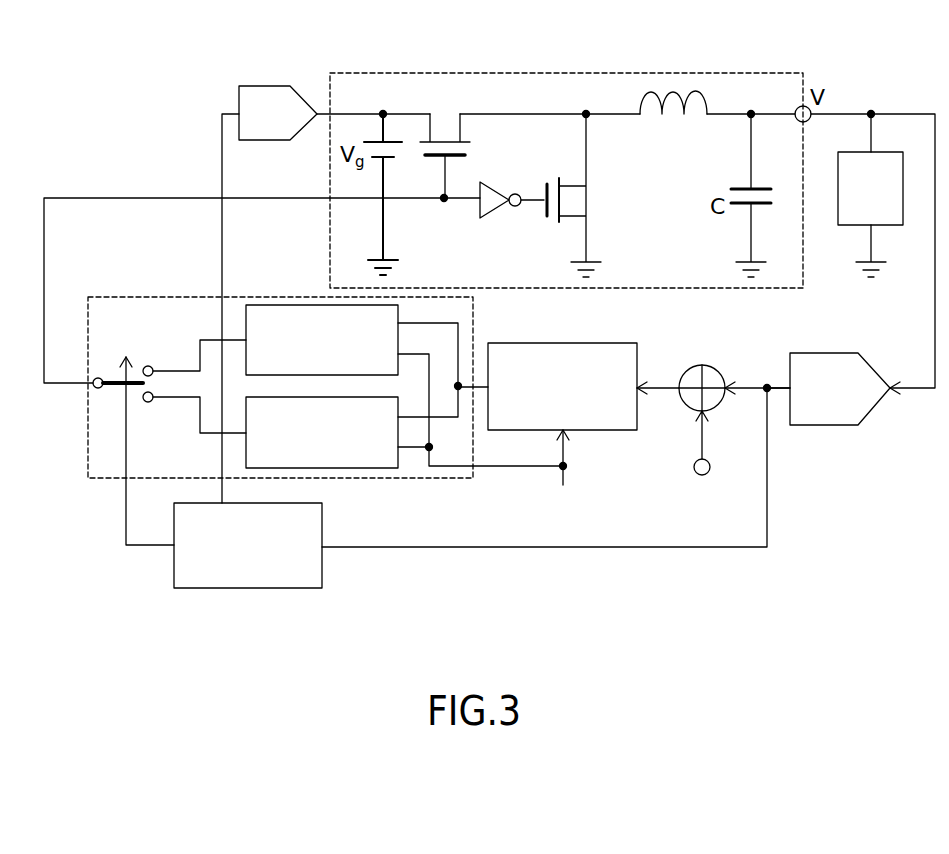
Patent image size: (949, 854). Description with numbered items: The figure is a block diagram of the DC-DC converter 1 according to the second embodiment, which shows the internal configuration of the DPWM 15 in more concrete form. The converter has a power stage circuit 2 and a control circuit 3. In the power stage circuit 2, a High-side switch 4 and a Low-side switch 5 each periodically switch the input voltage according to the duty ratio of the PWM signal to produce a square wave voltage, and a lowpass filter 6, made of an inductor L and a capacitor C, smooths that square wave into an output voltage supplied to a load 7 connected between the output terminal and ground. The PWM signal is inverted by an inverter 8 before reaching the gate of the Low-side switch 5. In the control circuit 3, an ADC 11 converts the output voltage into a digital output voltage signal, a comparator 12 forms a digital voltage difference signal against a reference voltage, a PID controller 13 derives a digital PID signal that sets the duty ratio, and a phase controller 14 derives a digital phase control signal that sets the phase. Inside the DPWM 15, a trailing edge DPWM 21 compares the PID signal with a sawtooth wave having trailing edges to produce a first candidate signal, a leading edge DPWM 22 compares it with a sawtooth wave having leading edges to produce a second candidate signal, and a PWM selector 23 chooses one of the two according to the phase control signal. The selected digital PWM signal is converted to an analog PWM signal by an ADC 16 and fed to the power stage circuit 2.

The DC-DC converter 1 is at (82, 531).
The power stage circuit 2 is at (760, 73).
The control circuit 3 is at (815, 494).
The High-side switch 4 is at (468, 147).
The Low-side switch 5 is at (571, 220).
The lowpass filter 6 is at (705, 149).
The load 7 is at (838, 208).
The inverter 8 is at (489, 222).
The A/D converter (ADC) 11 is at (846, 425).
The comparator (voltage difference signal generator) 12 is at (712, 368).
The PID controller 13 is at (592, 343).
The phase controller 14 is at (325, 577).
The PWM generator (DPWM) 15 is at (85, 425).
The A/D converter (ADC) 16 is at (262, 86).
The trailing edge DPWM (first comparator) 21 is at (374, 462).
The leading edge DPWM (second comparator) 22 is at (274, 305).
The PWM selector 23 is at (133, 413).